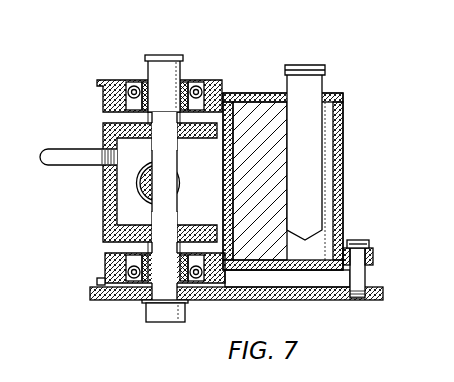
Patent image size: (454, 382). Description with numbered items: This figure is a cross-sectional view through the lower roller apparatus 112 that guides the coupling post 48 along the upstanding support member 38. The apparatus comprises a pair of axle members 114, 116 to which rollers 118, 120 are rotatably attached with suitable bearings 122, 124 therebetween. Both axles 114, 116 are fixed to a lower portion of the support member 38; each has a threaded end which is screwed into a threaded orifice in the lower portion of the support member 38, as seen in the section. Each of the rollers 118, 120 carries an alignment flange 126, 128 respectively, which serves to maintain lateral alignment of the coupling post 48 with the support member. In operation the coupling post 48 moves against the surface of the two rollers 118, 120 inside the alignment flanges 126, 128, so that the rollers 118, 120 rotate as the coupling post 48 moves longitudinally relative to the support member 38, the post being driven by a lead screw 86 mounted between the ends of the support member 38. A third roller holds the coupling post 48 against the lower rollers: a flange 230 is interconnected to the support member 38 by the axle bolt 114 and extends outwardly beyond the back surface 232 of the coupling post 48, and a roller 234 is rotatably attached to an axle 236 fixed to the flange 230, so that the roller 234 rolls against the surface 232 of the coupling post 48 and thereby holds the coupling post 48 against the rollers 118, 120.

The upstanding support member 38 is at (103, 126).
The coupling post 48 is at (343, 99).
The lead screw 86 is at (136, 180).
The lower roller apparatus 112 is at (214, 72).
The axle member 114 is at (163, 288).
The axle member 116 is at (163, 88).
The roller 118 is at (107, 257).
The roller 120 is at (103, 96).
The bearing 122 is at (197, 264).
The bearing 124 is at (192, 84).
The alignment flange 126 is at (100, 282).
The alignment flange 128 is at (225, 93).
The flange 230 is at (318, 298).
The back surface 232 is at (345, 183).
The roller 234 is at (375, 250).
The axle 236 is at (360, 280).